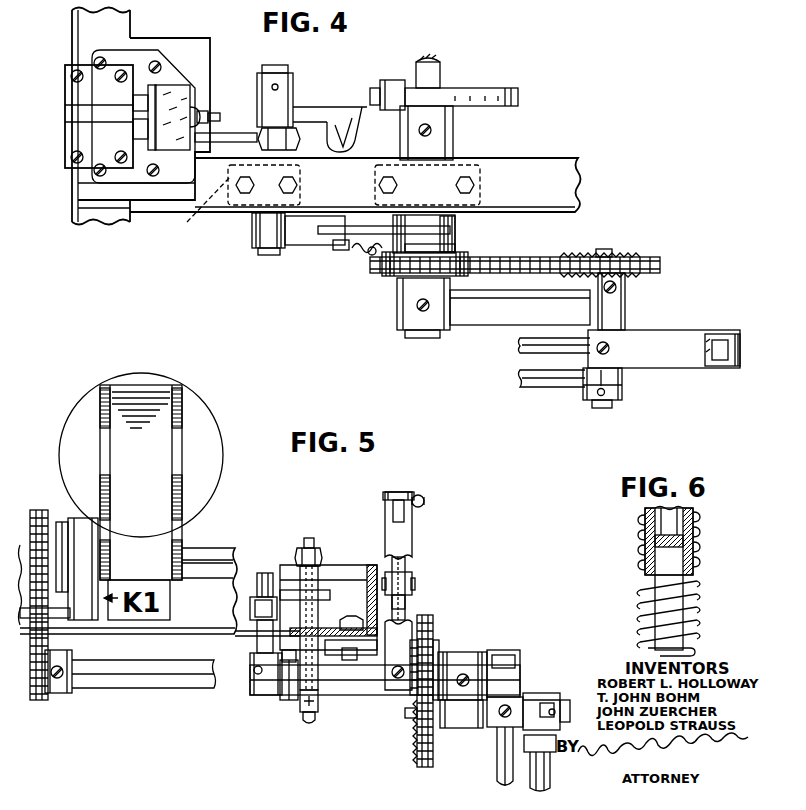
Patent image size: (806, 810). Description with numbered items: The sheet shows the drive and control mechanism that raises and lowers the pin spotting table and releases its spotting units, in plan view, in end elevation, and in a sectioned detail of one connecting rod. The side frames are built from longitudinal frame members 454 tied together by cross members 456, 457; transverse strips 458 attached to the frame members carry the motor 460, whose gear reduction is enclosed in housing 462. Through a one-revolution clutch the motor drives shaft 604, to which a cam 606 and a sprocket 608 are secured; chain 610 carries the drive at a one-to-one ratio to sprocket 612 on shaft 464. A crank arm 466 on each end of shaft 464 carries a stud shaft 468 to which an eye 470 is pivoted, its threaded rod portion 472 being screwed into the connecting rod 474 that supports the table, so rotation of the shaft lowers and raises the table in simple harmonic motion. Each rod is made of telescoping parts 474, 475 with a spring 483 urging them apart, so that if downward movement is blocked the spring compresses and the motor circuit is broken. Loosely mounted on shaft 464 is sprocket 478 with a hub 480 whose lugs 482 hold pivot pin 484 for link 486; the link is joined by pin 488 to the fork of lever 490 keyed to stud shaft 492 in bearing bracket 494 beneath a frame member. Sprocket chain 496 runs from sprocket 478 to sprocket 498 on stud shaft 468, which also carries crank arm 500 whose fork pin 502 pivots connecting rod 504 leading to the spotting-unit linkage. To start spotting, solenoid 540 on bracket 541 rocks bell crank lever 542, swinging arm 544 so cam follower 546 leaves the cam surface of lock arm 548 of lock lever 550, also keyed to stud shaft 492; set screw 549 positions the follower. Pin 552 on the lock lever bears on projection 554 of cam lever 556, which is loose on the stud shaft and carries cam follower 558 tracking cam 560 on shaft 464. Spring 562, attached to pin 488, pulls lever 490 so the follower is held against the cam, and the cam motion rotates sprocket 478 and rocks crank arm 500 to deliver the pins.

In FIG. 4, the longitudinal frame member 454 is at (577, 183).
In FIG. 5, the longitudinal frame member 454 is at (365, 593).
In FIG. 5, the cross member 456 is at (182, 622).
In FIG. 4, the cross member 457 is at (88, 37).
In FIG. 5, the transverse strip 458 is at (207, 574).
In FIG. 5, the motor 460 is at (200, 425).
In FIG. 5, the housing 462 is at (147, 402).
In FIG. 4, the shaft 464 is at (436, 82).
In FIG. 5, the shaft 464 is at (168, 676).
In FIG. 4, the crank arm 466 is at (480, 312).
In FIG. 5, the crank arm 466 is at (455, 717).
In FIG. 4, the stud shaft 468 is at (608, 253).
In FIG. 5, the stud shaft 468 is at (410, 716).
In FIG. 4, the eye 470 is at (625, 378).
In FIG. 5, the eye 470 is at (540, 708).
In FIG. 5, the threaded rod portion 472 is at (538, 735).
In FIG. 4, the connecting rod 474 is at (540, 379).
In FIG. 5, the connecting rod 474 is at (538, 763).
In FIG. 6, the connecting rod 474 is at (692, 522).
In FIG. 6, the telescoping part 475 is at (700, 647).
In FIG. 4, the sprocket 478 is at (383, 276).
In FIG. 5, the sprocket 478 is at (419, 645).
In FIG. 4, the hub 480 is at (456, 232).
In FIG. 4, the lug 482 is at (430, 242).
In FIG. 5, the lug 482 is at (405, 602).
In FIG. 6, the spring 483 is at (693, 598).
In FIG. 4, the pivot pin 484 is at (456, 251).
In FIG. 5, the pivot pin 484 is at (414, 582).
In FIG. 4, the link 486 is at (377, 229).
In FIG. 5, the link 486 is at (400, 492).
In FIG. 4, the pin 488 is at (335, 257).
In FIG. 5, the pin 488 is at (386, 498).
In FIG. 4, the lever 490 is at (308, 240).
In FIG. 5, the lever 490 is at (403, 540).
In FIG. 4, the stud shaft 492 is at (273, 73).
In FIG. 5, the stud shaft 492 is at (439, 653).
In FIG. 4, the bearing bracket 494 is at (196, 209).
In FIG. 5, the bearing bracket 494 is at (360, 680).
In FIG. 4, the sprocket chain 496 is at (523, 260).
In FIG. 5, the sprocket chain 496 is at (418, 763).
In FIG. 4, the sprocket 498 is at (647, 259).
In FIG. 5, the sprocket 498 is at (414, 733).
In FIG. 4, the crank arm 500 is at (670, 338).
In FIG. 5, the crank arm 500 is at (500, 712).
In FIG. 4, the pin 502 is at (730, 336).
In FIG. 5, the pin 502 is at (533, 697).
In FIG. 4, the connecting rod 504 is at (525, 345).
In FIG. 5, the connecting rod 504 is at (502, 750).
In FIG. 4, the solenoid 540 is at (78, 117).
In FIG. 4, the bracket 541 is at (180, 90).
In FIG. 4, the bell crank lever 542 is at (134, 118).
In FIG. 5, the arm 544 is at (288, 692).
In FIG. 5, the cam follower 546 is at (305, 714).
In FIG. 5, the lock arm 548 is at (311, 722).
In FIG. 4, the set screw 549 is at (214, 110).
In FIG. 4, the lock lever 550 is at (256, 137).
In FIG. 5, the lock lever 550 is at (318, 583).
In FIG. 4, the pin 552 is at (265, 150).
In FIG. 5, the pin 552 is at (308, 546).
In FIG. 4, the projection 554 is at (338, 130).
In FIG. 5, the projection 554 is at (312, 588).
In FIG. 4, the cam lever 556 is at (308, 110).
In FIG. 5, the cam lever 556 is at (267, 638).
In FIG. 4, the cam follower 558 is at (390, 93).
In FIG. 5, the cam follower 558 is at (262, 606).
In FIG. 4, the cam 560 is at (505, 93).
In FIG. 5, the cam 560 is at (265, 573).
In FIG. 4, the spring 562 is at (367, 257).
In FIG. 5, the spring 562 is at (420, 504).
In FIG. 5, the shaft 604 is at (30, 560).
In FIG. 5, the cam 606 is at (60, 556).
In FIG. 5, the sprocket 608 is at (60, 528).
In FIG. 5, the chain 610 is at (47, 616).
In FIG. 5, the sprocket 612 is at (62, 694).